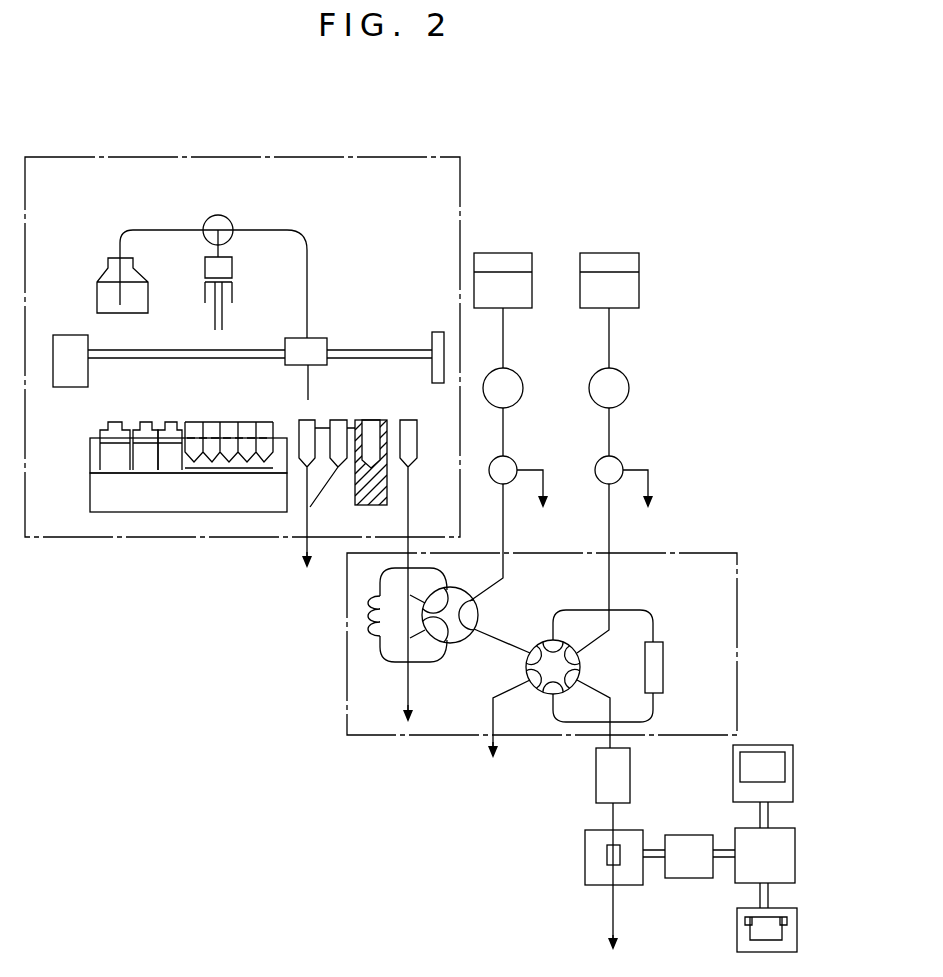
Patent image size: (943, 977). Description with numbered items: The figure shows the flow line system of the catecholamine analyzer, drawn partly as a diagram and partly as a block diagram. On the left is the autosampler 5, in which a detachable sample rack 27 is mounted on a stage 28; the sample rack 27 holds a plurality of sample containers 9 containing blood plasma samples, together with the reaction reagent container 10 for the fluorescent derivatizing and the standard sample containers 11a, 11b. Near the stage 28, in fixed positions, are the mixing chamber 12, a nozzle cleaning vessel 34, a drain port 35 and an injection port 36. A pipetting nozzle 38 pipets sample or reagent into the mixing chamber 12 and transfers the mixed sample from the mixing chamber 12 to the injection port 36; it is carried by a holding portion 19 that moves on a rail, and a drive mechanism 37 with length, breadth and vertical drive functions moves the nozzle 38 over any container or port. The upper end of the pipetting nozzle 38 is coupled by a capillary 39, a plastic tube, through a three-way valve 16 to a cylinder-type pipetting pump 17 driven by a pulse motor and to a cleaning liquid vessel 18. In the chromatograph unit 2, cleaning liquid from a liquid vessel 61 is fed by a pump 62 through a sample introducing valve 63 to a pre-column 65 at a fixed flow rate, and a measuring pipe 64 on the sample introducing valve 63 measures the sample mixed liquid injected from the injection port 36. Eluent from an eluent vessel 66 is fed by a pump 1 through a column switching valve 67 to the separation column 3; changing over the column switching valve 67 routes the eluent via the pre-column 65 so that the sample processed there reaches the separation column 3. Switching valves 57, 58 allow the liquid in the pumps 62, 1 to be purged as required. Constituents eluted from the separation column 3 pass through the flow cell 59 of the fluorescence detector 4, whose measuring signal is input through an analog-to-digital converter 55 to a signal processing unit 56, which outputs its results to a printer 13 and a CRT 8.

The pump 1 is at (629, 388).
The liquid chromatograph unit 2 is at (718, 553).
The separation column 3 is at (630, 772).
The fluorescence detector 4 is at (585, 873).
The autosampler 5 is at (78, 157).
The CRT 8 is at (772, 745).
The sample containers 9 is at (229, 420).
The reaction reagent container 10 is at (110, 422).
The standard sample container 11a is at (144, 422).
The standard sample container 11b is at (175, 422).
The mixing chamber 12 is at (373, 420).
The printer 13 is at (797, 930).
The three-way valve 16 is at (218, 215).
The pipetting pump 17 is at (232, 270).
The cleaning liquid vessel 18 is at (100, 278).
The holding portion 19 is at (318, 338).
The sample rack 27 is at (90, 456).
The stage 28 is at (90, 492).
The nozzle cleaning vessel 34 is at (306, 420).
The drain port 35 is at (338, 420).
The injection port 36 is at (417, 445).
The drive mechanism 37 is at (68, 335).
The pipetting nozzle 38 is at (308, 388).
The capillary 39 is at (307, 250).
The analog-to-digital converter 55 is at (688, 835).
The signal processing unit 56 is at (795, 855).
The switching valve 57 is at (514, 462).
The switching valve 58 is at (620, 462).
The flow cell 59 is at (607, 853).
The liquid vessel 61 is at (532, 288).
The pump 62 is at (523, 388).
The sample introducing valve 63 is at (460, 643).
The measuring pipe 64 is at (375, 640).
The pre-column 65 is at (663, 668).
The eluent vessel 66 is at (639, 283).
The column switching valve 67 is at (540, 648).